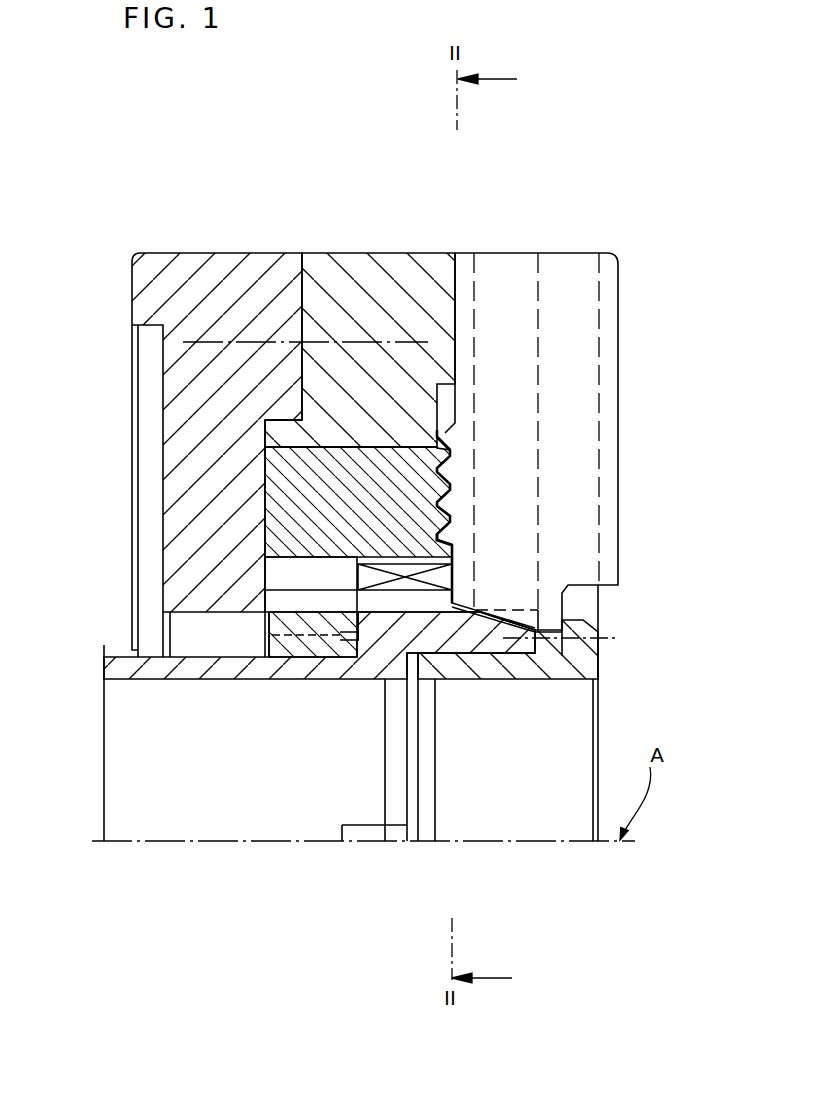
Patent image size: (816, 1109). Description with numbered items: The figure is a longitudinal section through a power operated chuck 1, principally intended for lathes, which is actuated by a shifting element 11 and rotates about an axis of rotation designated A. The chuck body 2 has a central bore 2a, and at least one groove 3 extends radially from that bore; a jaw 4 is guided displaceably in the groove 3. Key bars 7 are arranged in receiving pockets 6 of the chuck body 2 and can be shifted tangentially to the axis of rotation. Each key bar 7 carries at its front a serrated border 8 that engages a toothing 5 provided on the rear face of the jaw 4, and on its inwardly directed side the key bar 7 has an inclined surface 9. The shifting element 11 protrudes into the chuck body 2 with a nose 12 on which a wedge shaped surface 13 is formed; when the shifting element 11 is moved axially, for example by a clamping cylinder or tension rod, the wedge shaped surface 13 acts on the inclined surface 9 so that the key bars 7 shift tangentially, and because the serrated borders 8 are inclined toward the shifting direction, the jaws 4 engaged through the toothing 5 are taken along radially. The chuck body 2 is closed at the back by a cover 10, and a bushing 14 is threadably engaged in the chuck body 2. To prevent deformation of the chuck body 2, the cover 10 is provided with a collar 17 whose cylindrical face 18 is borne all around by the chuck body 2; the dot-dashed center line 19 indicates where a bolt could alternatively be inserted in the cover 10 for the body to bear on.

The power operated chuck 1 is at (74, 870).
The chuck body 2 is at (354, 246).
The central bore 2a is at (199, 778).
The groove 3 is at (461, 272).
The jaw 4 is at (569, 292).
The toothing 5 is at (450, 432).
The receiving pocket 6 is at (450, 502).
The key bar 7 is at (420, 535).
The serrated border 8 is at (447, 450).
The inclined surface 9 is at (288, 577).
The cover 10 is at (213, 280).
The shifting element 11 is at (306, 692).
The nose 12 is at (418, 598).
The wedge shaped surface 13 is at (373, 575).
The bushing 14 is at (508, 670).
The collar 17 is at (288, 382).
The cylindrical face 18 is at (280, 422).
The axis 19 is at (195, 332).